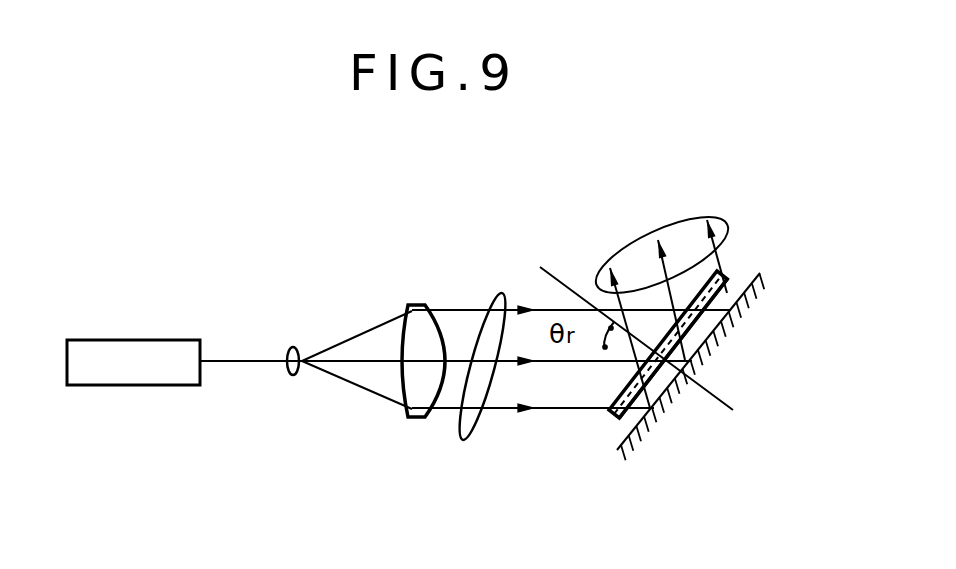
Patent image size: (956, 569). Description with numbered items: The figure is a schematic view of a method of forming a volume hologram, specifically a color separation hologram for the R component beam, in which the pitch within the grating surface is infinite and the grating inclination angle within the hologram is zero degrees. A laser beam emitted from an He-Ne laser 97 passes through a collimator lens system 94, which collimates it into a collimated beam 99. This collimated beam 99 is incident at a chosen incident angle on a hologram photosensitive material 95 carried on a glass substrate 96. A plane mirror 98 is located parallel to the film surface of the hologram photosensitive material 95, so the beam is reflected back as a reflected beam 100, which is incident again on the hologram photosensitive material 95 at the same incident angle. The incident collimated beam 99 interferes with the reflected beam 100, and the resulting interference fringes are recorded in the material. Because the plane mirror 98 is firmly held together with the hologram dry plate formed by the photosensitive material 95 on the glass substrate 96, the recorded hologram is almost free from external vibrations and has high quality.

The He-Ne laser 97 is at (170, 385).
The collimator lens system 94 is at (443, 437).
The collimated beam 99 is at (464, 441).
The glass substrate 96 is at (612, 415).
The hologram photosensitive material 95 is at (621, 423).
The plane mirror 98 is at (627, 446).
The reflected beam 100 is at (723, 213).